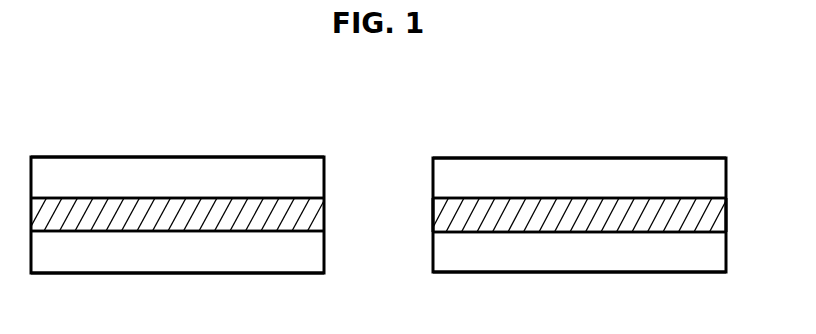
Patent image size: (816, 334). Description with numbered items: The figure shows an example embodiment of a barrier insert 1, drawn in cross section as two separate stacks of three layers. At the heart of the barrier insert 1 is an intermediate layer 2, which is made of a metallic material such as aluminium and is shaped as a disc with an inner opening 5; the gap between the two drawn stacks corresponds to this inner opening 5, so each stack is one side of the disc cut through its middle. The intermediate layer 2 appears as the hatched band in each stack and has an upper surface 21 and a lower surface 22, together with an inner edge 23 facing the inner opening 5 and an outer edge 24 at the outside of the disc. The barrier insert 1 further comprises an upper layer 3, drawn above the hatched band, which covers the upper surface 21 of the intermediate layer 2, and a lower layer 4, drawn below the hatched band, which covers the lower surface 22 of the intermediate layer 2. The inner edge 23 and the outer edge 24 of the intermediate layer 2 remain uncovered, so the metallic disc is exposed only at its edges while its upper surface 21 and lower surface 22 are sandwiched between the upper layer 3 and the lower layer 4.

The barrier insert 1 is at (381, 94).
The intermediate layer 2 is at (187, 215).
The upper layer 3 is at (144, 173).
The lower layer 4 is at (144, 259).
The inner opening 5 is at (379, 178).
The upper surface 21 is at (560, 197).
The lower surface 22 is at (560, 233).
The inner edge 23 is at (433, 213).
The outer edge 24 is at (726, 213).